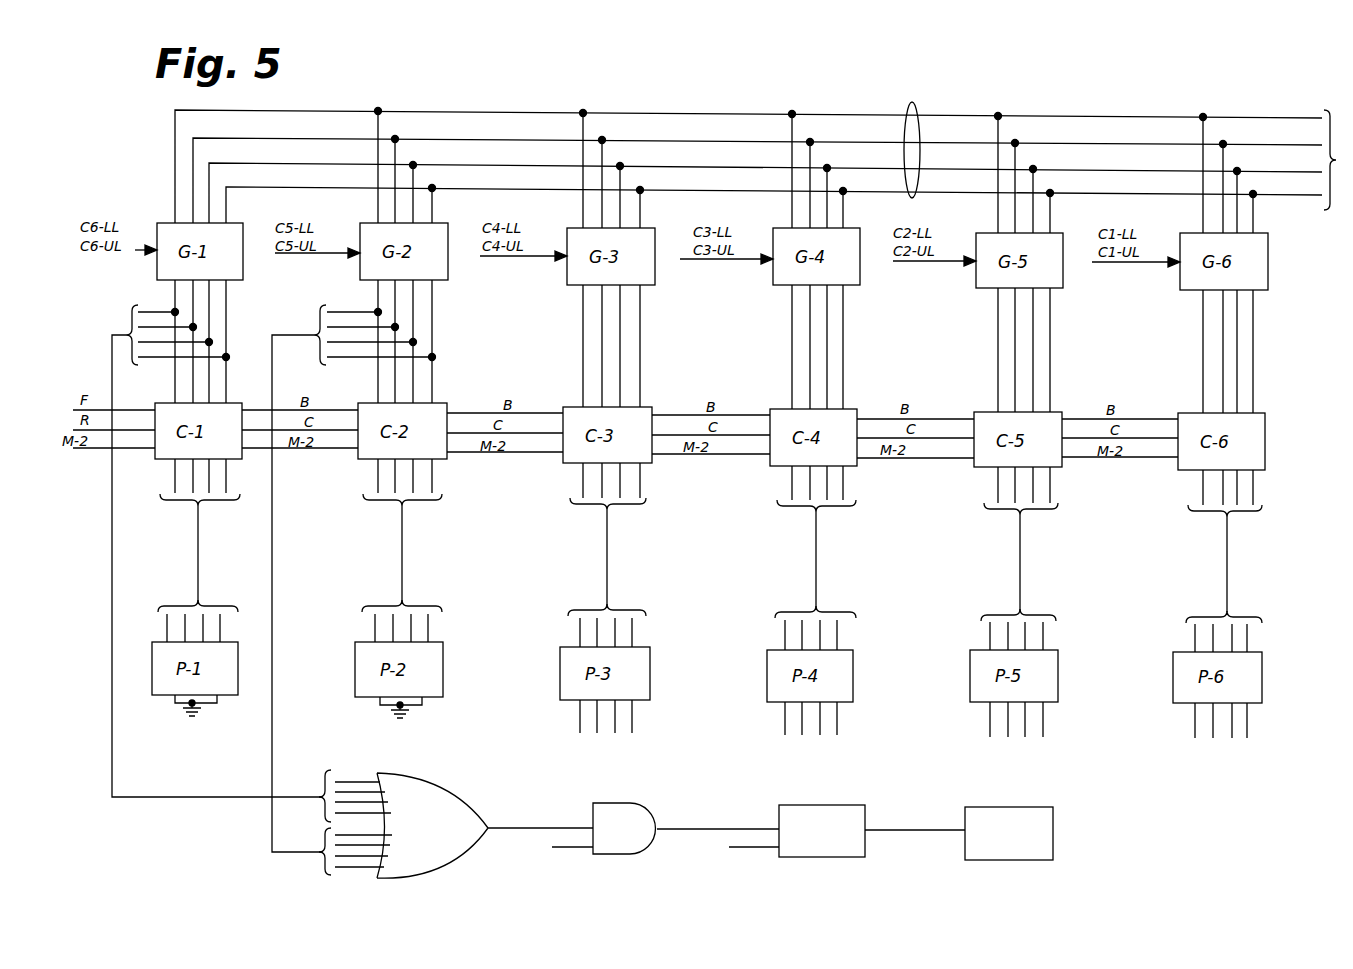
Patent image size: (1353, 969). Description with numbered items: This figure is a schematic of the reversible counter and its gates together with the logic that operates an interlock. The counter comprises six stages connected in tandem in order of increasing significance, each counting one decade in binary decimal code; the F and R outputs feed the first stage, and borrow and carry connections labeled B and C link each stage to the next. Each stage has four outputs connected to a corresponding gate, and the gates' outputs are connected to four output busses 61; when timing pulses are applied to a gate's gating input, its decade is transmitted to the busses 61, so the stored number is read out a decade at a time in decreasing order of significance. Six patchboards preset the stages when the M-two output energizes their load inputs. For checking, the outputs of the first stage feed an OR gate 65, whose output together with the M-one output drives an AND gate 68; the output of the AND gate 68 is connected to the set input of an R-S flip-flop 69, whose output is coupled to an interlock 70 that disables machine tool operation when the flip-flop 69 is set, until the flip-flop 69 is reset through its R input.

The output busses 61 is at (915, 104).
The OR gate 65 is at (447, 862).
The AND gate 68 is at (630, 803).
The R-S flip-flop 69 is at (845, 802).
The interlock 70 is at (1027, 804).